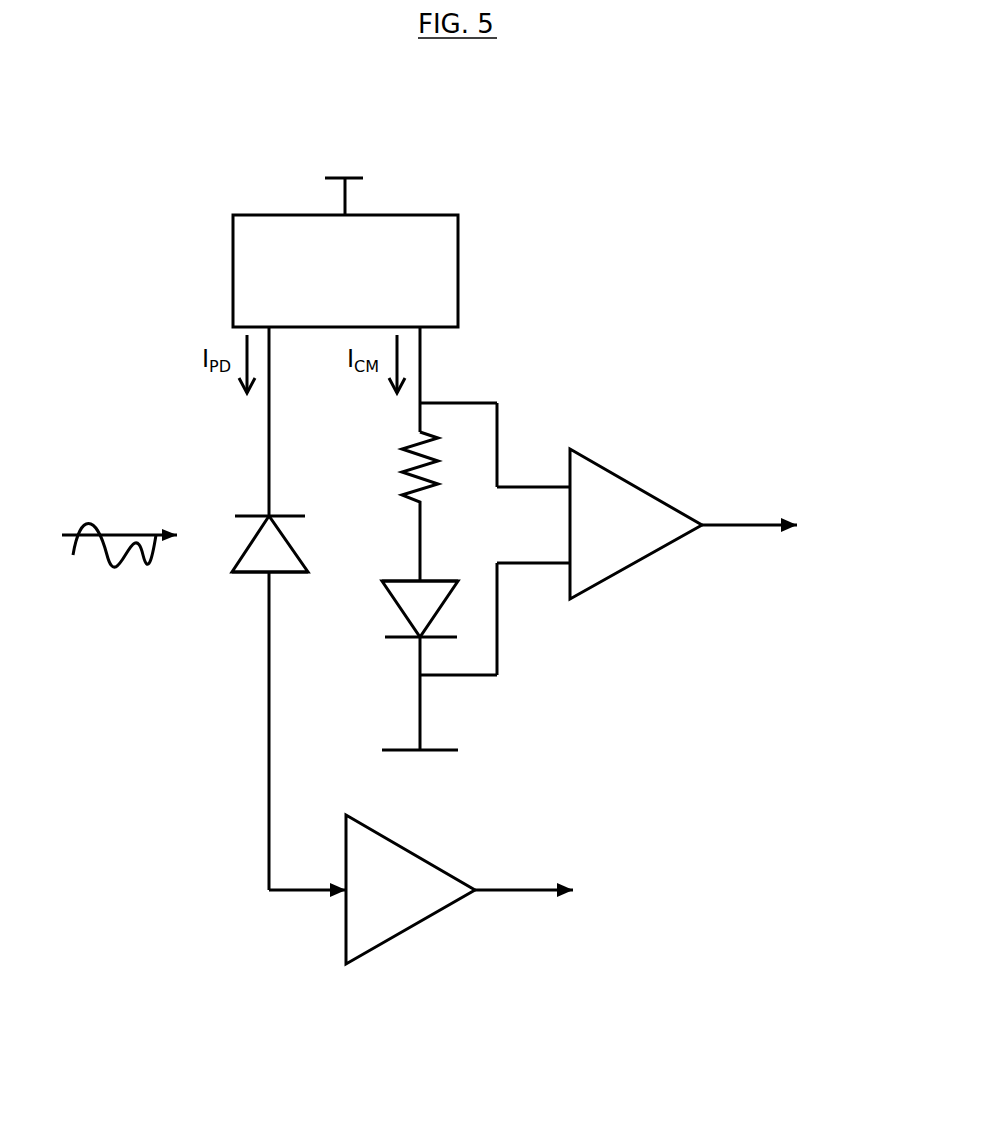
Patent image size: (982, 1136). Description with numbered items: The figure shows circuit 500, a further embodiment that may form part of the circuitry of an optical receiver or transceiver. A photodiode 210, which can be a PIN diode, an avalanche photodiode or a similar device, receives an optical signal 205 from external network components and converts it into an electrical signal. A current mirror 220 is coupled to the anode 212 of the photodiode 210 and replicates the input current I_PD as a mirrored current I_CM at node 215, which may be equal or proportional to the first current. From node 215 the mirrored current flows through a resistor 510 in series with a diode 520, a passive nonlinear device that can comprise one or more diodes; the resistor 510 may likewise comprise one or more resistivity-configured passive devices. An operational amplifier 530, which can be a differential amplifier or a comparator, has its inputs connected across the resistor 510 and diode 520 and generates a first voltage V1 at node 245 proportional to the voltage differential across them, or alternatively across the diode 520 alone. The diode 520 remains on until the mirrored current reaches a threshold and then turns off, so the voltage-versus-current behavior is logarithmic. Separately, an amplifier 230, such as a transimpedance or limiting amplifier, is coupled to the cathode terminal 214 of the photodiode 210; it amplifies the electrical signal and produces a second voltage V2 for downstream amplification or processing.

The circuit 500 is at (552, 142).
The current mirror 220 is at (232, 240).
The node 215 is at (425, 357).
The resistor 510 is at (402, 455).
The diode 520 is at (400, 610).
The photodiode 210 is at (282, 549).
The anode 212 is at (268, 508).
The cathode terminal 214 is at (265, 576).
The optical signal 205 is at (120, 557).
The operational amplifier 530 is at (652, 493).
The node 245 is at (752, 520).
The amplifier 230 is at (427, 925).